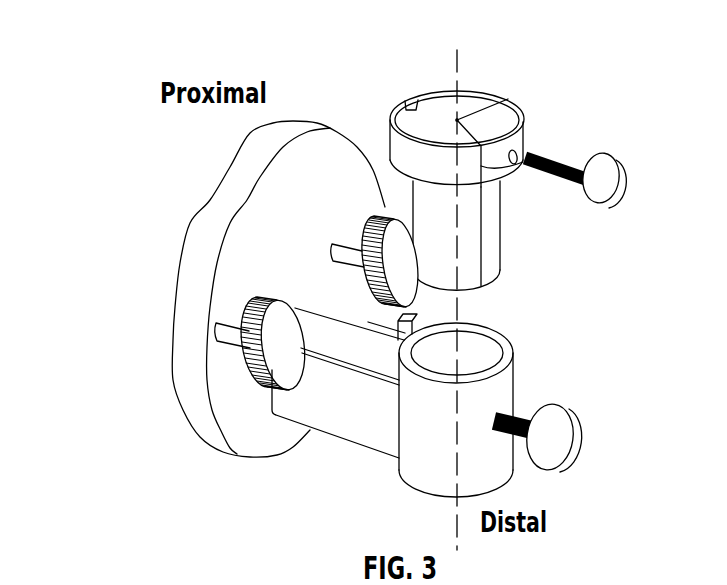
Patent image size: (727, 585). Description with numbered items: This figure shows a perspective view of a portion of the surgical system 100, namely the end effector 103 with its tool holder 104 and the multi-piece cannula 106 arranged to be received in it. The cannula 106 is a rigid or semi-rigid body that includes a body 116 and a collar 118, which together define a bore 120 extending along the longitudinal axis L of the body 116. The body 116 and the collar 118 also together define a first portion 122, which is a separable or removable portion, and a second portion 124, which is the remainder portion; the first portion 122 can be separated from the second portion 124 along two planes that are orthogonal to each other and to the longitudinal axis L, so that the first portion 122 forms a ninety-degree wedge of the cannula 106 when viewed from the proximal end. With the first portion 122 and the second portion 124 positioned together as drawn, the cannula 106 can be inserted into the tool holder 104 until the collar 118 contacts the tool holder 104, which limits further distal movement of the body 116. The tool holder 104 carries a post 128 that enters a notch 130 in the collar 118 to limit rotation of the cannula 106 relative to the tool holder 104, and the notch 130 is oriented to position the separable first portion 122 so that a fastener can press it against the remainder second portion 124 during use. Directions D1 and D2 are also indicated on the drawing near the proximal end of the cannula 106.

The surgical system 100 is at (130, 76).
The end effector 103 is at (222, 197).
The tool holder 104 is at (487, 397).
The cannula 106 is at (468, 170).
The body 116 is at (498, 292).
The collar 118 is at (442, 112).
The bore 120 is at (457, 120).
The first portion 122 is at (490, 240).
The second portion 124 is at (468, 150).
The post 128 is at (367, 323).
The notch 130 is at (405, 105).
The longitudinal axis L is at (453, 78).
The first direction D1 is at (522, 168).
The second direction D2 is at (500, 108).